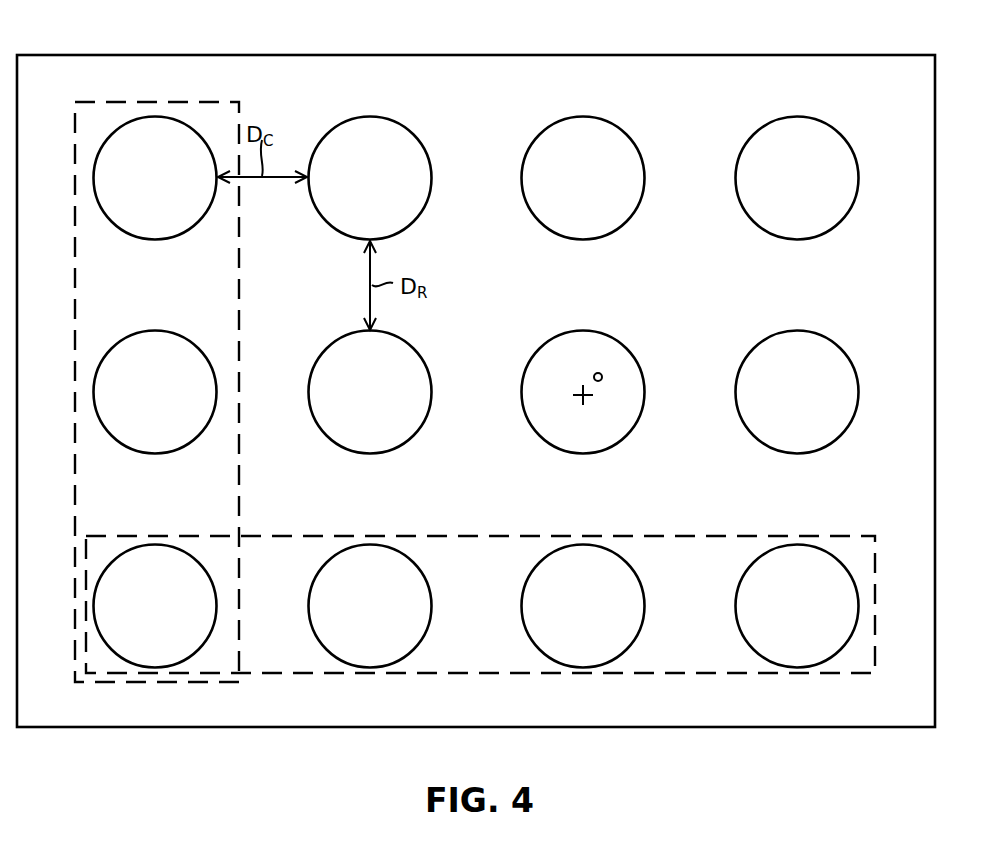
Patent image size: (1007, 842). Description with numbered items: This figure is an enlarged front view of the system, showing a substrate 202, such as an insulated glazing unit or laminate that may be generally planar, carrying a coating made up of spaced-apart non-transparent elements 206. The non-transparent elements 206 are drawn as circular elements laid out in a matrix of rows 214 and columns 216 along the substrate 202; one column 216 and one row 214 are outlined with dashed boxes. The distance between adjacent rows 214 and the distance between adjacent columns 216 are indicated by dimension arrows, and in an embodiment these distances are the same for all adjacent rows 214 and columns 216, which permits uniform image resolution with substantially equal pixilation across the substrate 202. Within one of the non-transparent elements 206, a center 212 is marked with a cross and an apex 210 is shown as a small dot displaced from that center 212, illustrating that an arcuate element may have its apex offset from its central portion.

The substrate 202 is at (293, 524).
The non-transparent elements 206 is at (745, 425).
The apex 210 is at (602, 376).
The center 212 is at (580, 387).
The rows 214 is at (732, 673).
The columns 216 is at (125, 101).